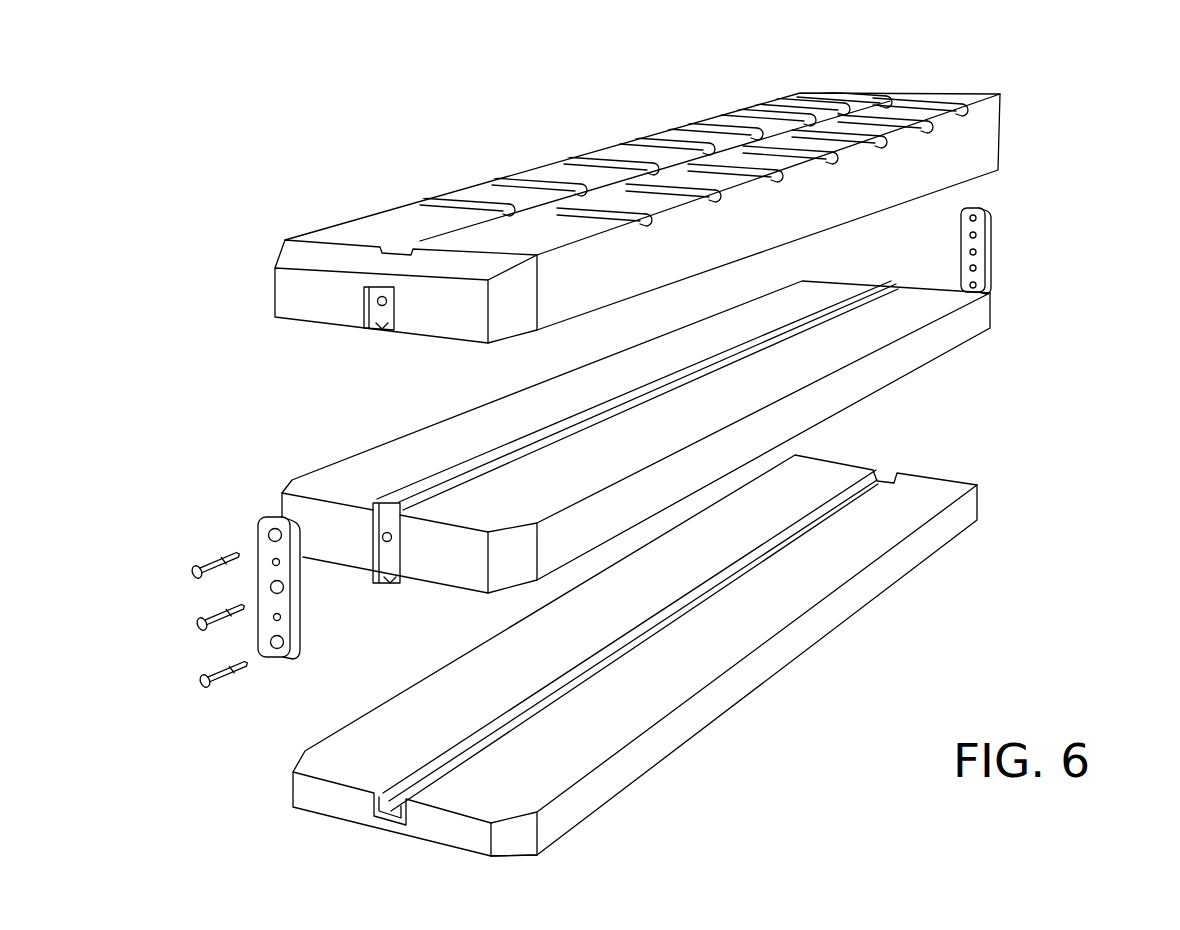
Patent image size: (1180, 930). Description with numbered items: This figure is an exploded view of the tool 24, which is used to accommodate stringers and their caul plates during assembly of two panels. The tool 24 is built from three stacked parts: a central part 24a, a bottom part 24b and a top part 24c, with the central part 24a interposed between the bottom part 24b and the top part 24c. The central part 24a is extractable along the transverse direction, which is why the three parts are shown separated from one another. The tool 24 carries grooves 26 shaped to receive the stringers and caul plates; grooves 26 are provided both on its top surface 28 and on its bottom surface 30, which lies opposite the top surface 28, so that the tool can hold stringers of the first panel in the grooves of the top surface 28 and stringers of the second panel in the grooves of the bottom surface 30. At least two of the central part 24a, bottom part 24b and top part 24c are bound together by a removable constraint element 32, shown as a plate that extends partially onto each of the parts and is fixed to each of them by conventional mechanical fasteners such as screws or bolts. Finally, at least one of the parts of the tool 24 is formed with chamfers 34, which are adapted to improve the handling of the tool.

The tool 24 is at (242, 293).
The central part 24a is at (980, 310).
The bottom part 24b is at (965, 515).
The top part 24c is at (975, 132).
The grooves 26 is at (490, 182).
The top surface 28 is at (822, 88).
The bottom surface 30 is at (470, 794).
The removable constraint element 32 is at (273, 657).
The chamfers 34 is at (537, 858).